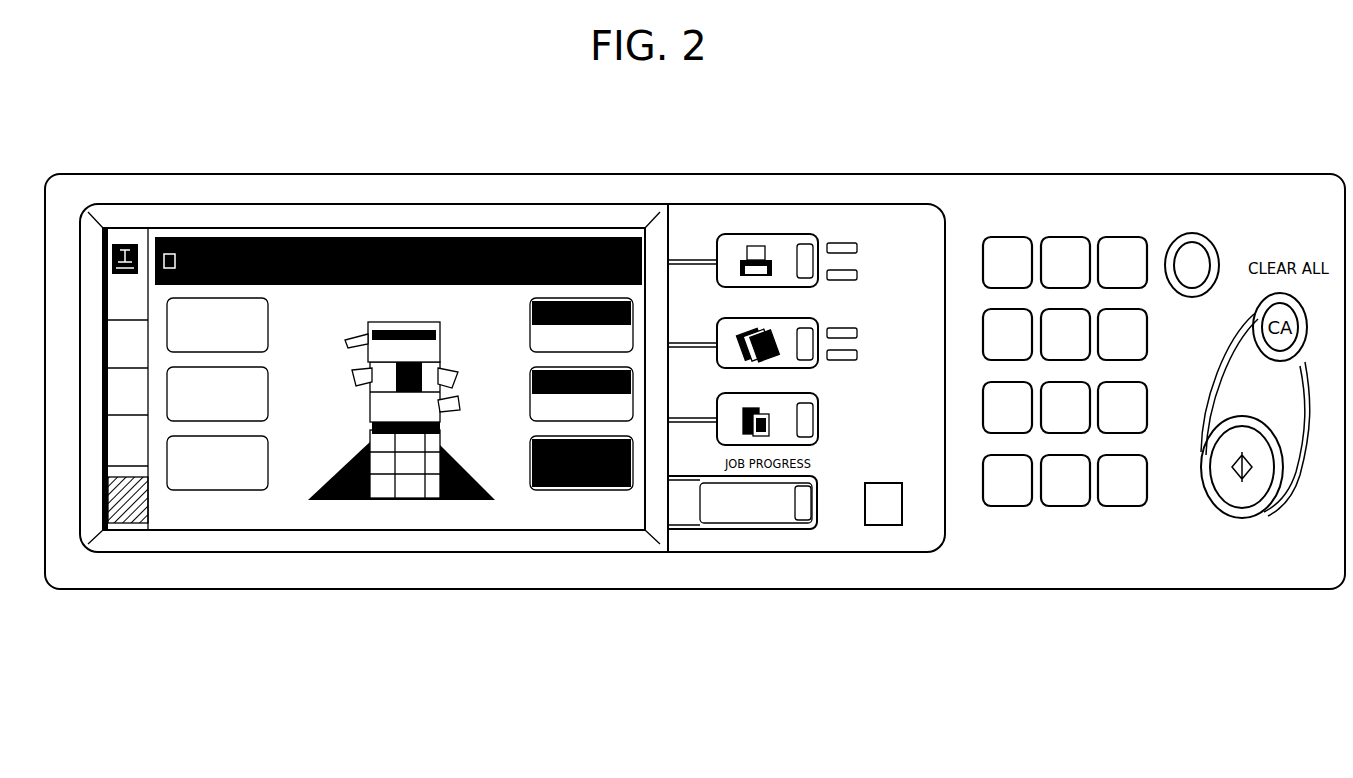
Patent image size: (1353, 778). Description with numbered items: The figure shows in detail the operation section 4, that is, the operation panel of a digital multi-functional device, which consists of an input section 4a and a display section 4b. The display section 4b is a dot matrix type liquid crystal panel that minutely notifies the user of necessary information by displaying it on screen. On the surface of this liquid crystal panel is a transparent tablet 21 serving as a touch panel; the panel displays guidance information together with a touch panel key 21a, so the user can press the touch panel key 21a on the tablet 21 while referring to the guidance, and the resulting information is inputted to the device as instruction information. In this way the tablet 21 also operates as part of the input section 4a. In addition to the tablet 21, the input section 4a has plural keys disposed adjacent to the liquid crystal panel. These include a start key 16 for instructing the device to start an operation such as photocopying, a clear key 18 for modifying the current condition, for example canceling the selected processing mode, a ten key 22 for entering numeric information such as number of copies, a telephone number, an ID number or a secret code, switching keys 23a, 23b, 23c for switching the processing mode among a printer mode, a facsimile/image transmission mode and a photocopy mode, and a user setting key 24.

The operation section 4 is at (1137, 90).
The input section 4a is at (497, 678).
The display section 4b is at (622, 211).
The tablet 21 is at (540, 500).
The touch panel key 21a is at (620, 495).
The switching key 23a is at (716, 274).
The switching key 23b is at (815, 364).
The switching key 23c is at (738, 439).
The user setting key 24 is at (882, 522).
The ten key 22 is at (1066, 509).
The clear key 18 is at (1192, 298).
The start key 16 is at (1240, 520).